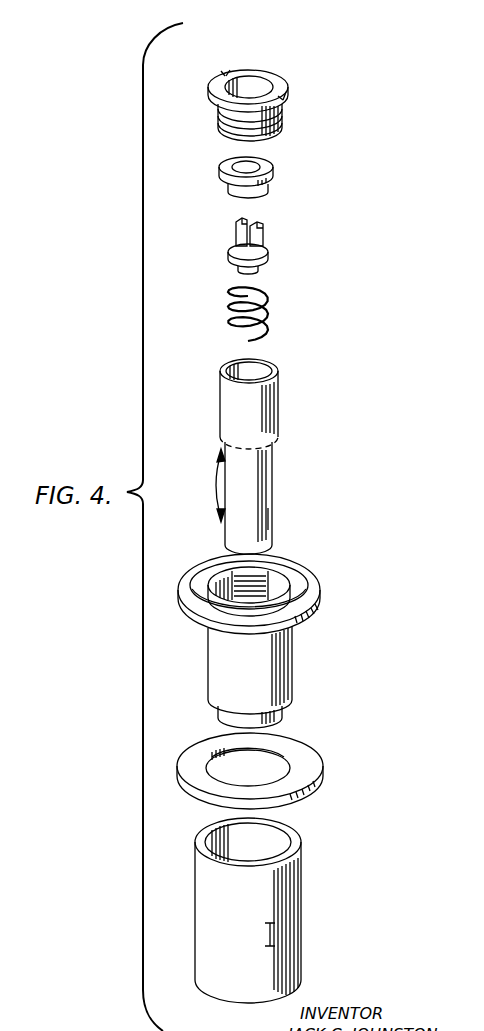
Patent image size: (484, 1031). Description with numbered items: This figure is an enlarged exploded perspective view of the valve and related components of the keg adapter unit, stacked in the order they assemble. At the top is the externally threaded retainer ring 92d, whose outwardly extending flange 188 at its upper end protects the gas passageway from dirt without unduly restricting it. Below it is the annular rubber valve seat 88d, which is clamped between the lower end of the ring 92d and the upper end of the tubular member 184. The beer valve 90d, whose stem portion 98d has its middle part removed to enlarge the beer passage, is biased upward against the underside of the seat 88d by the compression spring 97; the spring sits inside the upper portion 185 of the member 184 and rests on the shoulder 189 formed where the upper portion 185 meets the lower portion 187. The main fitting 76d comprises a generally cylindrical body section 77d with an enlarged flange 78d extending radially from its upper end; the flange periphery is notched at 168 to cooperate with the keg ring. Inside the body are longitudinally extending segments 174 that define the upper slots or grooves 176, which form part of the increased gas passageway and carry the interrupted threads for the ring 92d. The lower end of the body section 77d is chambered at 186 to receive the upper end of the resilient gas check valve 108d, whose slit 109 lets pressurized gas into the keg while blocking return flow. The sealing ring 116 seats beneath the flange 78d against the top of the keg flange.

The outwardly extending flange 188 is at (277, 77).
The externally threaded retainer ring 92d is at (288, 118).
The annular rubber valve seat 88d is at (276, 176).
The stem portion 98d is at (261, 233).
The beer valve 90d is at (270, 260).
The compression spring 97 is at (268, 311).
The upper portion of tubular member 185 is at (231, 404).
The shoulder 189 is at (276, 435).
The tubular member 184 is at (273, 481).
The lower portion of tubular member 187 is at (270, 514).
The main fitting 76d is at (213, 486).
The upper slots or grooves 176 is at (222, 577).
The longitudinally extending segments 174 is at (251, 580).
The notched portion of flange 168 is at (303, 597).
The enlarged flange 78d is at (320, 611).
The cylindrical body section 77d is at (210, 647).
The chambered lower end 186 is at (284, 705).
The sealing ring 116 is at (310, 752).
The slit 109 is at (272, 930).
The resilient gas check valve 108d is at (215, 970).